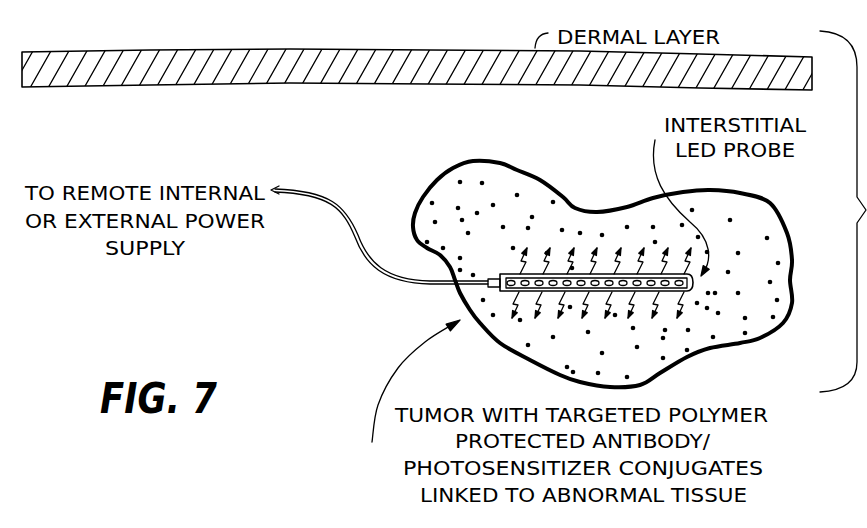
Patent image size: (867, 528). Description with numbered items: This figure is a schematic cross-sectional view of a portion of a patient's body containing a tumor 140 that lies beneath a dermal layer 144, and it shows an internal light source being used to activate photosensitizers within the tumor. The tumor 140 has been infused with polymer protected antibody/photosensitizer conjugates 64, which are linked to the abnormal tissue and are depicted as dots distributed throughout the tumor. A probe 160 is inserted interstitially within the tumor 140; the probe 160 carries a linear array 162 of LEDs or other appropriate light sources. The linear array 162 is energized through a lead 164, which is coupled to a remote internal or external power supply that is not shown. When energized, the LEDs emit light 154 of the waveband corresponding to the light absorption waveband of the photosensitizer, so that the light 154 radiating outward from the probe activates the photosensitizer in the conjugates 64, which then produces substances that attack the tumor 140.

The dermal layer 144 is at (305, 48).
The tumor 140 is at (425, 194).
The polymer protected antibody/photosensitizer conjugates 64 is at (463, 180).
The lead 164 is at (350, 221).
The linear array 162 is at (472, 292).
The light 154 is at (643, 304).
The probe 160 is at (693, 287).